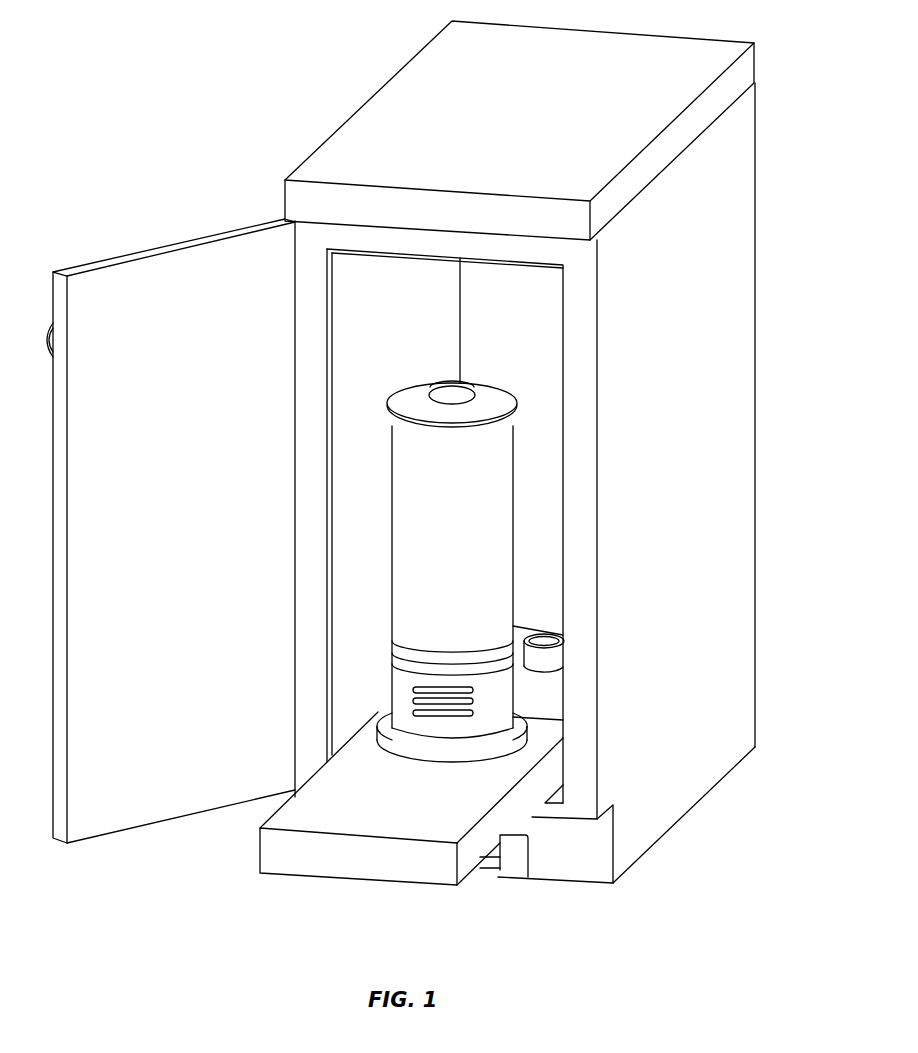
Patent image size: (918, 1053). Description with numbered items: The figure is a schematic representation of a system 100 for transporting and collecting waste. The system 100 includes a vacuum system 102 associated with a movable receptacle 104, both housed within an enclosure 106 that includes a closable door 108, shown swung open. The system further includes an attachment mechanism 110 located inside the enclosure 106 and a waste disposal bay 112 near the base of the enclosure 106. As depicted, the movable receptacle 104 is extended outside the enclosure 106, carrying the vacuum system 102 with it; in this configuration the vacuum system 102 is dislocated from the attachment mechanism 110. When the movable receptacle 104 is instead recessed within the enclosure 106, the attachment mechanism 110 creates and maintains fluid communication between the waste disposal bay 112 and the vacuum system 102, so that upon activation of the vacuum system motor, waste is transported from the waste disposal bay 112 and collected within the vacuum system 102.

The system 100 is at (205, 38).
The vacuum system 102 is at (461, 535).
The movable receptacle 104 is at (413, 813).
The enclosure 106 is at (765, 377).
The closable door 108 is at (105, 250).
The attachment mechanism 110 is at (544, 662).
The waste disposal bay 112 is at (493, 877).